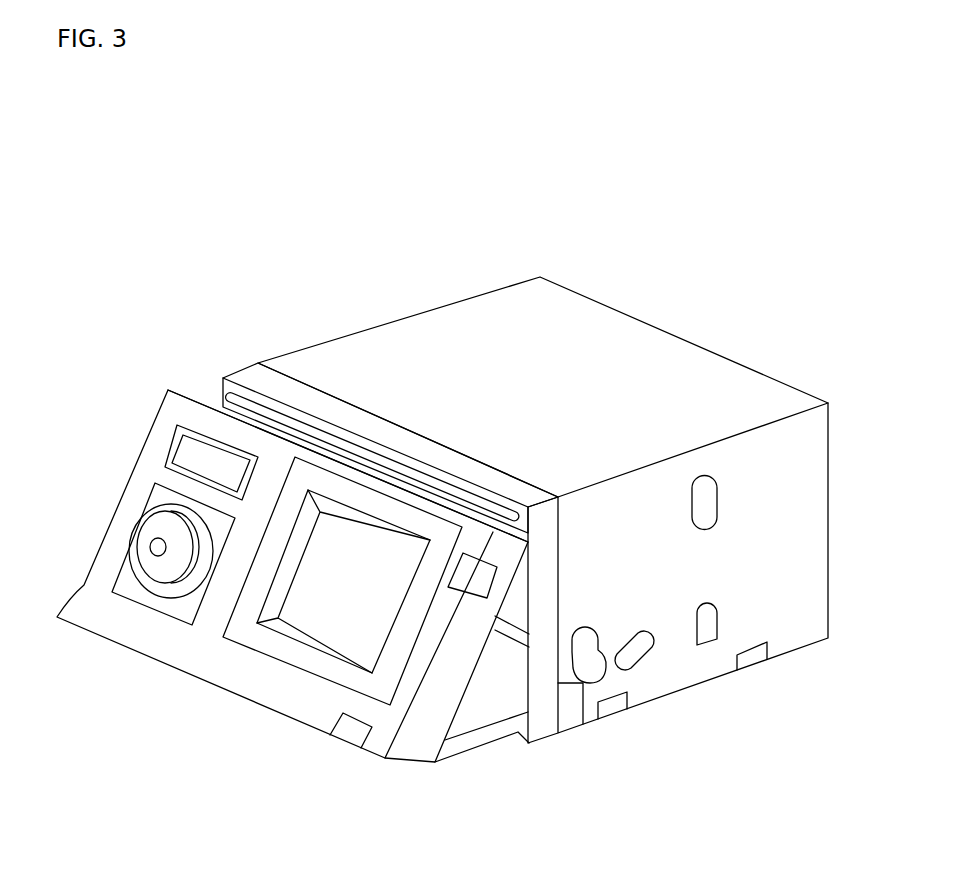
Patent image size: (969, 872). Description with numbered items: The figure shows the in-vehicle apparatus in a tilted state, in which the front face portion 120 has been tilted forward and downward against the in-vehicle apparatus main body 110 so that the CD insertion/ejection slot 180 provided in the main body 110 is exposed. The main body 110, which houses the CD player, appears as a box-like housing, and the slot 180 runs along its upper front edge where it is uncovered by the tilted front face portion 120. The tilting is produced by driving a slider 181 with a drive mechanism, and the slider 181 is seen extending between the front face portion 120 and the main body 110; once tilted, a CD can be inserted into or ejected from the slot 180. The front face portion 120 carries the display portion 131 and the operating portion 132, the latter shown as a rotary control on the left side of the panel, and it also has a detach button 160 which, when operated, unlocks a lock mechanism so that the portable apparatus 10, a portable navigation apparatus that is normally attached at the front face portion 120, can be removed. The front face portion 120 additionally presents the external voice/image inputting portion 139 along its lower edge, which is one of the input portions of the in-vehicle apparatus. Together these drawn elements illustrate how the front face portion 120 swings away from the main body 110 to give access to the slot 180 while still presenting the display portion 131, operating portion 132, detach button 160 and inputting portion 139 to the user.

The portable apparatus 10 is at (329, 548).
The in-vehicle apparatus main body 110 is at (560, 340).
The front face portion 120 is at (222, 403).
The display portion 131 is at (173, 453).
The operating portion 132 is at (126, 537).
The external voice/image inputting portion 139 is at (348, 730).
The detach button 160 is at (487, 571).
The CD insertion/ejection slot 180 is at (288, 414).
The slider 181 is at (508, 630).